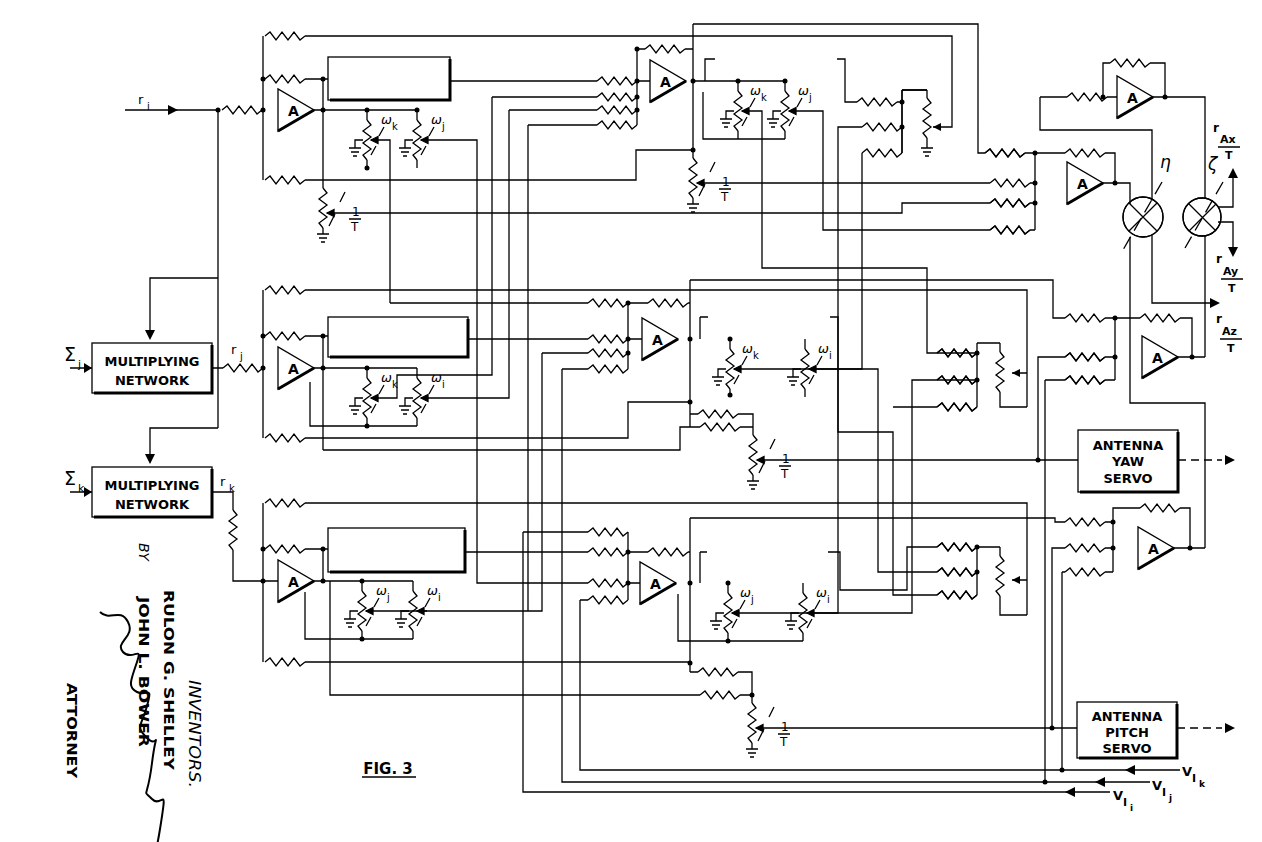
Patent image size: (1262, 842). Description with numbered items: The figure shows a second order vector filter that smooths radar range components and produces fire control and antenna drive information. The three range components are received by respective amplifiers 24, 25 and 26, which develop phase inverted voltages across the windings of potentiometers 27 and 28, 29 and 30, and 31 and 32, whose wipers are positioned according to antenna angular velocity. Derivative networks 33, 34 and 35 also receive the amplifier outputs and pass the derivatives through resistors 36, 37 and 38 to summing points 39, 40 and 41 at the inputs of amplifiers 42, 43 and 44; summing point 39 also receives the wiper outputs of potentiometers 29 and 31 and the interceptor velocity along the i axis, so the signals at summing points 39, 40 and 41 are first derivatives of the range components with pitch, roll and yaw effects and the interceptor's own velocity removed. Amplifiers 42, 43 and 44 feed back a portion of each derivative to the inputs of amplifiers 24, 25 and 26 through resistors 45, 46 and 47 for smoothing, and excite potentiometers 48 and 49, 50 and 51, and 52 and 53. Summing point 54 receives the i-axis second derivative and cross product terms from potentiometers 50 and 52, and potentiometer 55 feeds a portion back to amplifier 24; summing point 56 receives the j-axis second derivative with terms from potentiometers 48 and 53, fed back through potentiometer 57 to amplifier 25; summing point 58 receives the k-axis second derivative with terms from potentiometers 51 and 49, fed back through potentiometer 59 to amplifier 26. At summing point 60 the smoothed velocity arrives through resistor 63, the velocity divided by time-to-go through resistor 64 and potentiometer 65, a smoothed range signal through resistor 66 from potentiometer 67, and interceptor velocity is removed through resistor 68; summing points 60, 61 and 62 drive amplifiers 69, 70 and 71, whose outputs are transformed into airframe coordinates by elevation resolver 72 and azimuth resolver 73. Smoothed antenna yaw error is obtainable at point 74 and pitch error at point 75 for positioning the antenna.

The amplifier 24 is at (290, 128).
The amplifier 25 is at (290, 386).
The amplifier 26 is at (290, 599).
The potentiometer 27 is at (360, 137).
The potentiometer 28 is at (425, 140).
The potentiometer 29 is at (360, 397).
The potentiometer 30 is at (425, 400).
The potentiometer 31 is at (354, 610).
The potentiometer 32 is at (420, 622).
The derivative network 33 is at (450, 62).
The derivative network 34 is at (328, 322).
The derivative network 35 is at (328, 530).
The resistor 36 is at (615, 79).
The resistor 37 is at (595, 337).
The resistor 38 is at (615, 538).
The summing point 39 is at (637, 112).
The summing point 40 is at (628, 365).
The summing point 41 is at (628, 600).
The amplifier 42 is at (665, 94).
The amplifier 43 is at (658, 350).
The amplifier 44 is at (652, 596).
The resistor 45 is at (282, 183).
The resistor 46 is at (300, 441).
The resistor 47 is at (288, 665).
The potentiometer 48 is at (745, 116).
The potentiometer 49 is at (790, 118).
The potentiometer 50 is at (735, 372).
The potentiometer 51 is at (810, 376).
The potentiometer 52 is at (722, 612).
The potentiometer 53 is at (810, 615).
The summing point 54 is at (903, 108).
The potentiometer 55 is at (935, 132).
The summing point 56 is at (977, 395).
The potentiometer 57 is at (1008, 380).
The summing point 58 is at (977, 598).
The potentiometer 59 is at (998, 612).
The summing point 60 is at (1035, 218).
The summing point 61 is at (1115, 365).
The summing point 62 is at (1113, 570).
The resistor 63 is at (1002, 150).
The resistor 64 is at (990, 185).
The potentiometer 65 is at (687, 176).
The resistor 66 is at (990, 205).
The potentiometer 67 is at (318, 208).
The resistor 68 is at (990, 232).
The amplifier 69 is at (1085, 192).
The amplifier 70 is at (1165, 366).
The amplifier 71 is at (1160, 558).
The elevation resolver 72 is at (1133, 235).
The azimuth resolver 73 is at (1195, 236).
The point 74 is at (742, 446).
The point 75 is at (757, 680).